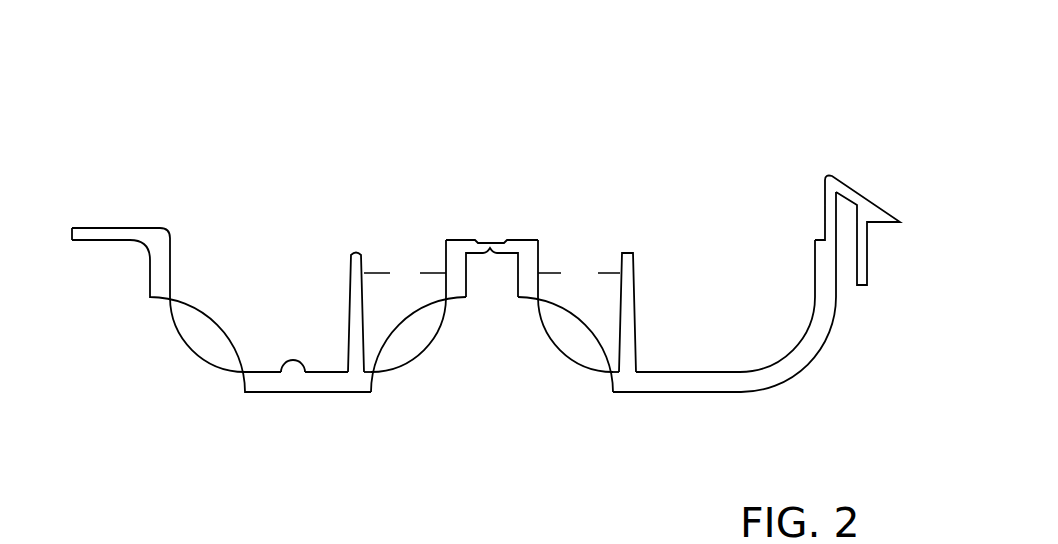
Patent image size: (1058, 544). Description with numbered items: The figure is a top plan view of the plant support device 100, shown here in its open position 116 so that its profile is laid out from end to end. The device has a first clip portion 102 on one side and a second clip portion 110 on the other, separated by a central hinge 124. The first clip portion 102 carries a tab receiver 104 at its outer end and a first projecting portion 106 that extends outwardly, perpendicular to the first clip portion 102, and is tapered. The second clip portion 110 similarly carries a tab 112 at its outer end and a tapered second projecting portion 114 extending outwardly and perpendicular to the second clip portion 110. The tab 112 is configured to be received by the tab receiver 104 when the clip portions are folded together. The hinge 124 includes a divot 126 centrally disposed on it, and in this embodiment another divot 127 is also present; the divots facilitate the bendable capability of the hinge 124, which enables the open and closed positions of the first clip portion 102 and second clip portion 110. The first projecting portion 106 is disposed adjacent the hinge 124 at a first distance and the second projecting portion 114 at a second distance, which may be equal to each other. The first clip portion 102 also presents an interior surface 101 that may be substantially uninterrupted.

The plant support device 100 is at (114, 86).
The interior surface 101 is at (285, 366).
The first clip portion 102 is at (197, 363).
The tab receiver 104 is at (108, 235).
The first projecting portion 106 is at (355, 252).
The second clip portion 110 is at (787, 362).
The tab 112 is at (868, 210).
The second projecting portion 114 is at (627, 252).
The open position 116 is at (402, 222).
The hinge 124 is at (528, 245).
The divot 126 is at (490, 250).
The another divot 127 is at (483, 243).